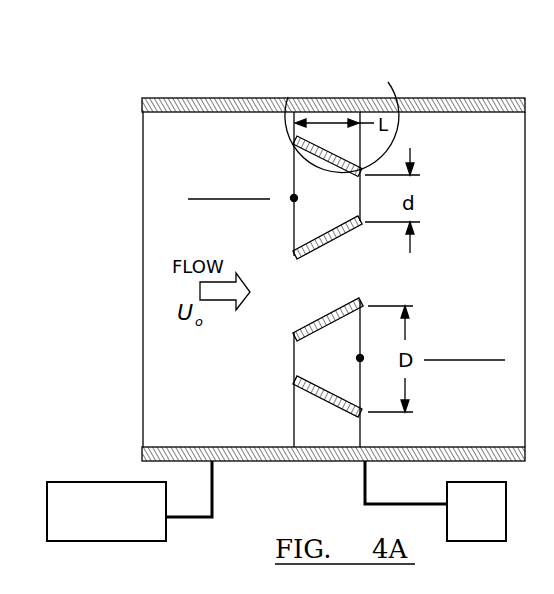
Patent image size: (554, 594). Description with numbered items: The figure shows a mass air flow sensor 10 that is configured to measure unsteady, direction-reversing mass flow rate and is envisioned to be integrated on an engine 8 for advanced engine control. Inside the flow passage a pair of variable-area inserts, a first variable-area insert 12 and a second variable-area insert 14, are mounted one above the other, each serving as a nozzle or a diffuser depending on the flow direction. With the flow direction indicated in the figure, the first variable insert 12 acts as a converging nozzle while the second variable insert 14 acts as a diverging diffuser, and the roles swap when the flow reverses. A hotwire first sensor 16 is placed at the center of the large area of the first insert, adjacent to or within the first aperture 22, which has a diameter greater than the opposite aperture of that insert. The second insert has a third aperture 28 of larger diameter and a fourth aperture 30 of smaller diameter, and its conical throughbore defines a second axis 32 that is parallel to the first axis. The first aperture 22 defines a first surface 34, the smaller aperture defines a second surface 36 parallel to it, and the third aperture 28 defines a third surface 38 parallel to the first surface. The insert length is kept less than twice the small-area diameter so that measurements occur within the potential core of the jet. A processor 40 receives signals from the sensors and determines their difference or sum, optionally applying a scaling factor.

The engine 8 is at (129, 492).
The mass air flow sensor 10 is at (333, 260).
The first variable-area insert 12 is at (281, 147).
The second variable-area insert 14 is at (356, 353).
The first sensor 16 is at (292, 202).
The first aperture 22 is at (295, 257).
The third aperture 28 is at (357, 338).
The fourth aperture 30 is at (290, 386).
The second axis 32 is at (230, 197).
The first surface 34 is at (288, 97).
The second surface 36 is at (388, 82).
The third surface 38 is at (362, 300).
The processor 40 is at (459, 501).